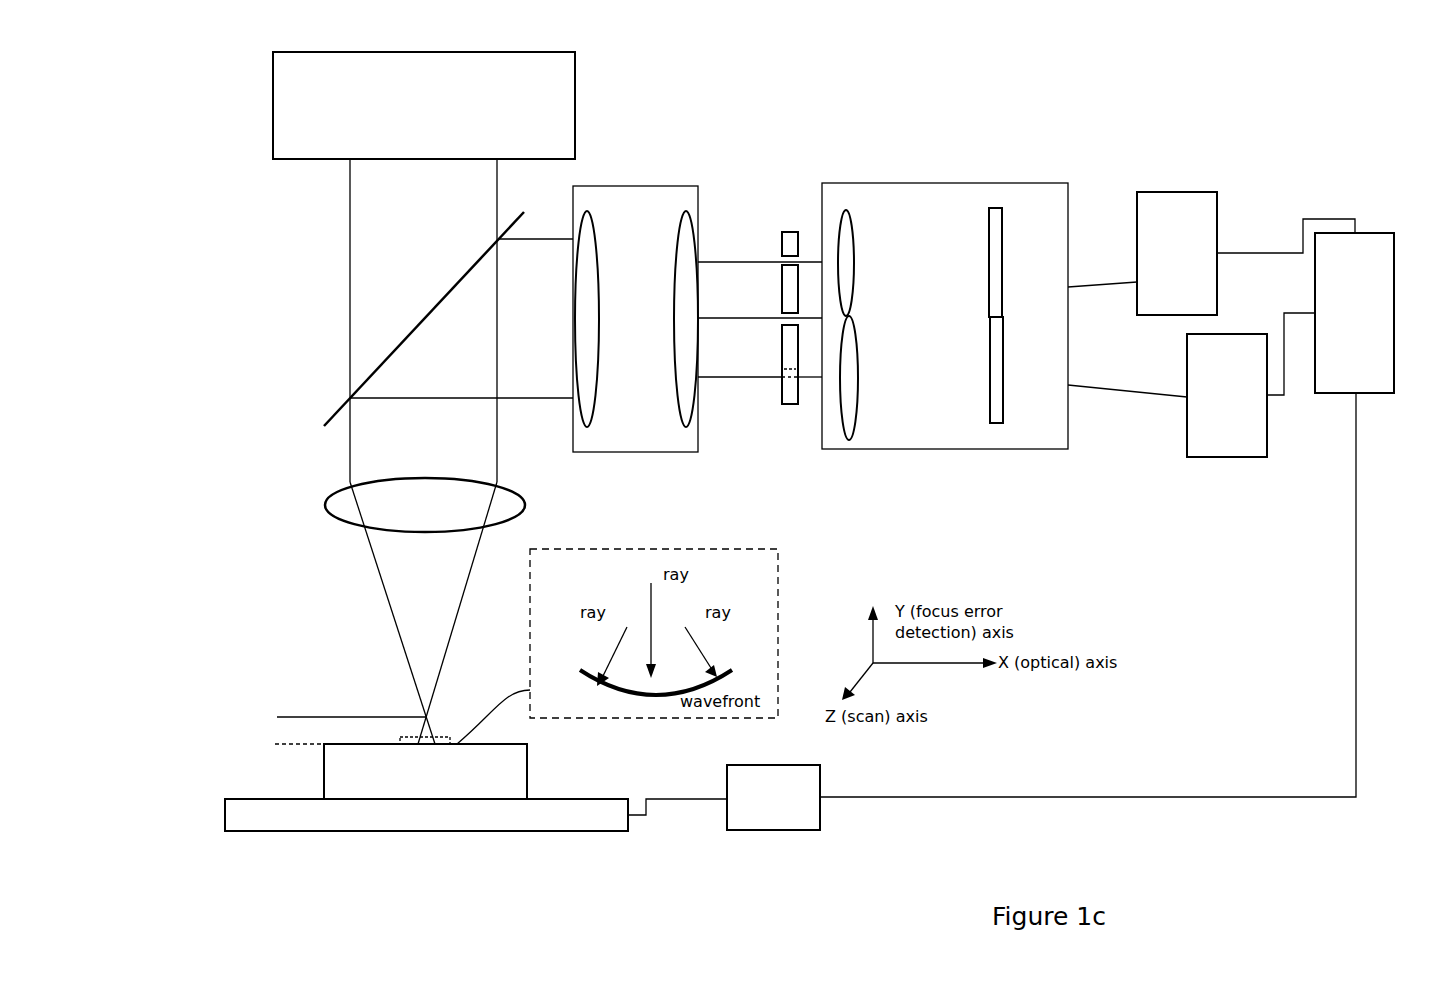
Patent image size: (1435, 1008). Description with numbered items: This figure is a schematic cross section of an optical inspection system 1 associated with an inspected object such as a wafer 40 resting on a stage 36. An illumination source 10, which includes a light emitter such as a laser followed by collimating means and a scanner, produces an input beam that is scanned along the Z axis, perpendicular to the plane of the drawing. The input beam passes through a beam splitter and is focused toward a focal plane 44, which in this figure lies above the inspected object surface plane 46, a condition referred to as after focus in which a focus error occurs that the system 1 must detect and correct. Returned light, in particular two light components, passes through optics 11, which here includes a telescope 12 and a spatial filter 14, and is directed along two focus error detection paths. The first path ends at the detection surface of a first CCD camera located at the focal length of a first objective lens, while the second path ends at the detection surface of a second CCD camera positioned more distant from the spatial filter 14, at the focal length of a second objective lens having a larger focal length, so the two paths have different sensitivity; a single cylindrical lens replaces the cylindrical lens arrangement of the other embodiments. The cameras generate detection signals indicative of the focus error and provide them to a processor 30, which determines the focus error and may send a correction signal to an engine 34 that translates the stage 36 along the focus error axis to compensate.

The optical inspection system 1 is at (996, 861).
The illumination source 10 is at (513, 115).
The optics 11 is at (680, 486).
The telescope 12 is at (648, 436).
The spatial filter 14 is at (790, 232).
The processor 30 is at (1344, 330).
The engine 34 is at (764, 815).
The stage 36 is at (465, 821).
The wafer 40 is at (507, 796).
The focal plane 44 is at (322, 709).
The inspected object surface plane 46 is at (256, 763).